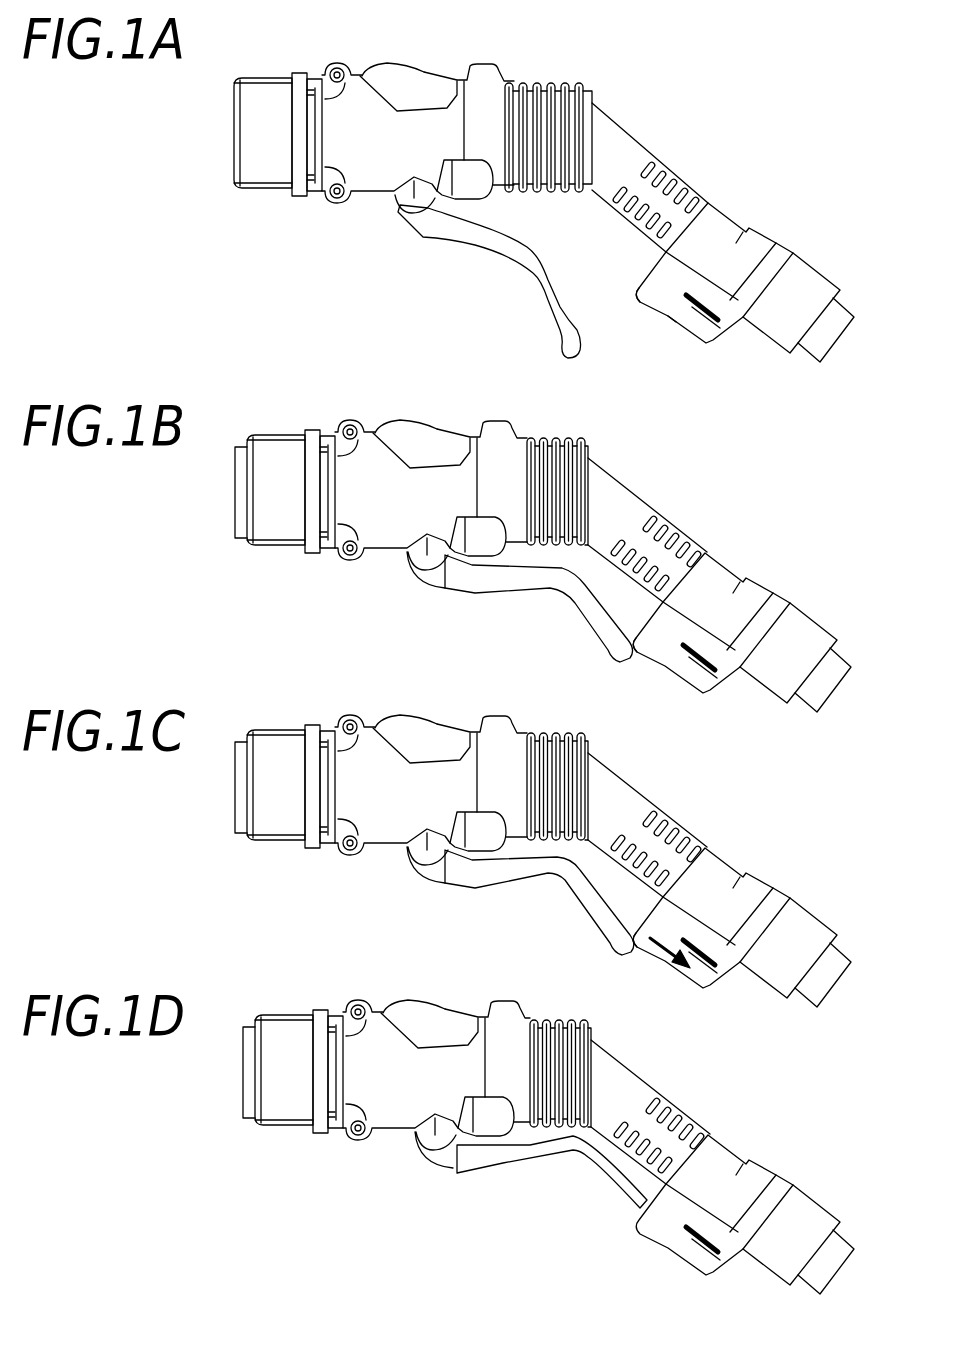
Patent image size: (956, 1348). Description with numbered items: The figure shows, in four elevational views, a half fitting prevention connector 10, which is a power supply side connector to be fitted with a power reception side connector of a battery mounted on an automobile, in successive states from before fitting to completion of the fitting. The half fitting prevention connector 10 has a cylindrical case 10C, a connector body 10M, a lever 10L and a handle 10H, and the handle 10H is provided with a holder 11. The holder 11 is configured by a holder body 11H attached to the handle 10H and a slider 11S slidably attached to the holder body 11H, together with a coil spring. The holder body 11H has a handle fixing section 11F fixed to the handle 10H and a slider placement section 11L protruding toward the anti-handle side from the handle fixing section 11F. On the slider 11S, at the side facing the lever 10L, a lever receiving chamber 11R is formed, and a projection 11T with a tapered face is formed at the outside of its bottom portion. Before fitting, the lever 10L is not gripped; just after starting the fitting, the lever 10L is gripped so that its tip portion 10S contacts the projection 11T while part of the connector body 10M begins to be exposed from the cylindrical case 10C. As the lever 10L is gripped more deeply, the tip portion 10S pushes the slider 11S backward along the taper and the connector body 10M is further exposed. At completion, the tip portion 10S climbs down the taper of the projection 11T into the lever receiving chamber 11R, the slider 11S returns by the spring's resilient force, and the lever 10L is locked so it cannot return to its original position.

In FIG. 1A, the half fitting prevention connector 10 is at (574, 52).
In FIG. 1B, the half fitting prevention connector 10 is at (581, 427).
In FIG. 1C, the half fitting prevention connector 10 is at (579, 722).
In FIG. 1D, the half fitting prevention connector 10 is at (579, 1009).
In FIG. 1A, the cylindrical case 10C is at (467, 82).
In FIG. 1B, the cylindrical case 10C is at (480, 432).
In FIG. 1C, the cylindrical case 10C is at (480, 727).
In FIG. 1D, the cylindrical case 10C is at (488, 1012).
In FIG. 1A, the handle 10H is at (637, 142).
In FIG. 1B, the handle 10H is at (640, 498).
In FIG. 1C, the handle 10H is at (640, 793).
In FIG. 1D, the handle 10H is at (688, 1110).
In FIG. 1A, the lever 10L is at (543, 296).
In FIG. 1B, the lever 10L is at (590, 610).
In FIG. 1C, the lever 10L is at (570, 890).
In FIG. 1D, the lever 10L is at (580, 1165).
In FIG. 1B, the connector body 10M is at (235, 520).
In FIG. 1B, the tip portion 10S is at (620, 666).
In FIG. 1C, the tip portion 10S is at (628, 951).
In FIG. 1A, the holder 11 is at (718, 205).
In FIG. 1B, the holder 11 is at (733, 686).
In FIG. 1C, the holder 11 is at (734, 981).
In FIG. 1D, the holder 11 is at (710, 1276).
In FIG. 1A, the lever receiving chamber 11R is at (643, 272).
In FIG. 1D, the lever receiving chamber 11R is at (640, 1208).
In FIG. 1A, the projection with a tapered face 11T is at (640, 300).
In FIG. 1B, the projection with a tapered face 11T is at (634, 654).
In FIG. 1C, the projection with a tapered face 11T is at (636, 948).
In FIG. 1A, the slider 11S is at (672, 318).
In FIG. 1A, the slider placement section 11L is at (730, 330).
In FIG. 1A, the handle fixing section 11F is at (753, 307).
In FIG. 1A, the holder body 11H is at (803, 388).